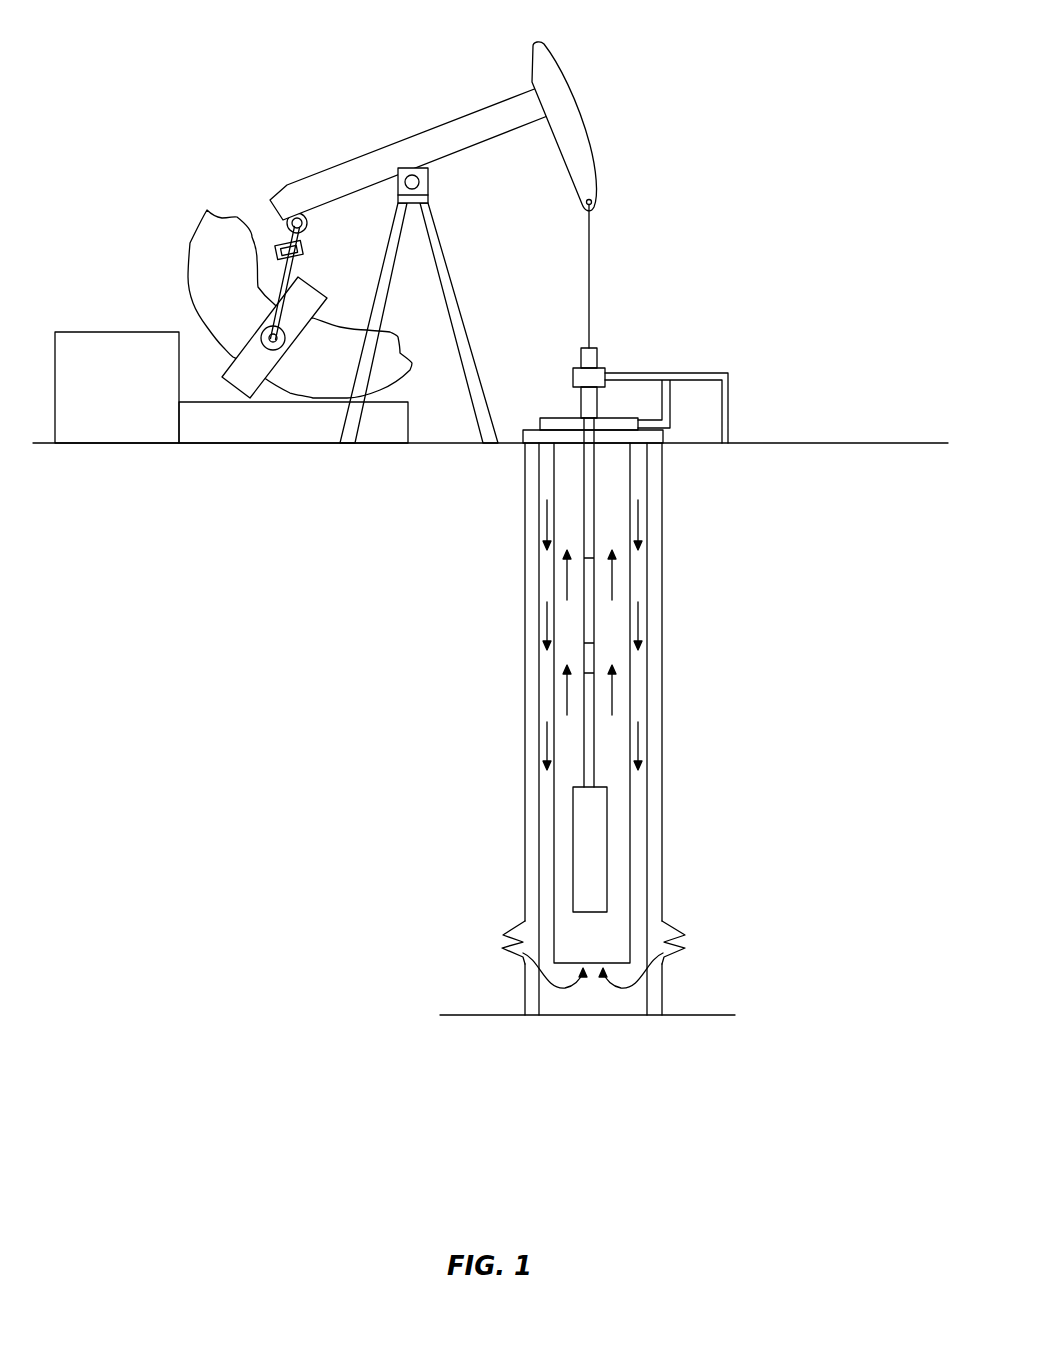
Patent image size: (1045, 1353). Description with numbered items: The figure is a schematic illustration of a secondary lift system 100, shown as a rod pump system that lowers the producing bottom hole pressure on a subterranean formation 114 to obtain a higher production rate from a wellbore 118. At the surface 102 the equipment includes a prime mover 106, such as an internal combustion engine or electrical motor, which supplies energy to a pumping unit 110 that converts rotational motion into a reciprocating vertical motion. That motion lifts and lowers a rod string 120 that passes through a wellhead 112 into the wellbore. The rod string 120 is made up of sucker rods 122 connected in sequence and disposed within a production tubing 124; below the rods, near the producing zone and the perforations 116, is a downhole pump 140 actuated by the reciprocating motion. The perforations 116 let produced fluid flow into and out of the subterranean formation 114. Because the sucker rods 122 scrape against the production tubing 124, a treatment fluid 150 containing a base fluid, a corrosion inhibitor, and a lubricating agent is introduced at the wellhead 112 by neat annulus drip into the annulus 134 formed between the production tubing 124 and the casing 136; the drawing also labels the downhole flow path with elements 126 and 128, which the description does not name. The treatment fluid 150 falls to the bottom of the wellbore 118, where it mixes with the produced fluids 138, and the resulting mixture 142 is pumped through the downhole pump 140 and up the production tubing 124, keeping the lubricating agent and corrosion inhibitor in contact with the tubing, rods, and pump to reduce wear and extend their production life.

The secondary lift system 100 is at (800, 68).
The surface 102 is at (815, 440).
The prime mover 106 is at (96, 401).
The pumping unit 110 is at (330, 143).
The wellhead 112 is at (600, 357).
The subterranean formation 114 is at (316, 497).
The perforations 116 is at (527, 953).
The wellbore 118 is at (522, 775).
The rod string 120 is at (590, 268).
The sucker rods 122 is at (594, 649).
The production tubing 124 is at (630, 597).
The annulus 126 is at (636, 563).
The casing 128 is at (653, 497).
The annulus 134 is at (545, 692).
The casing 136 is at (530, 830).
The produced fluids 138 is at (568, 990).
The downhole pump 140 is at (596, 852).
The mixture 142 is at (612, 693).
The treatment fluid 150 is at (545, 628).